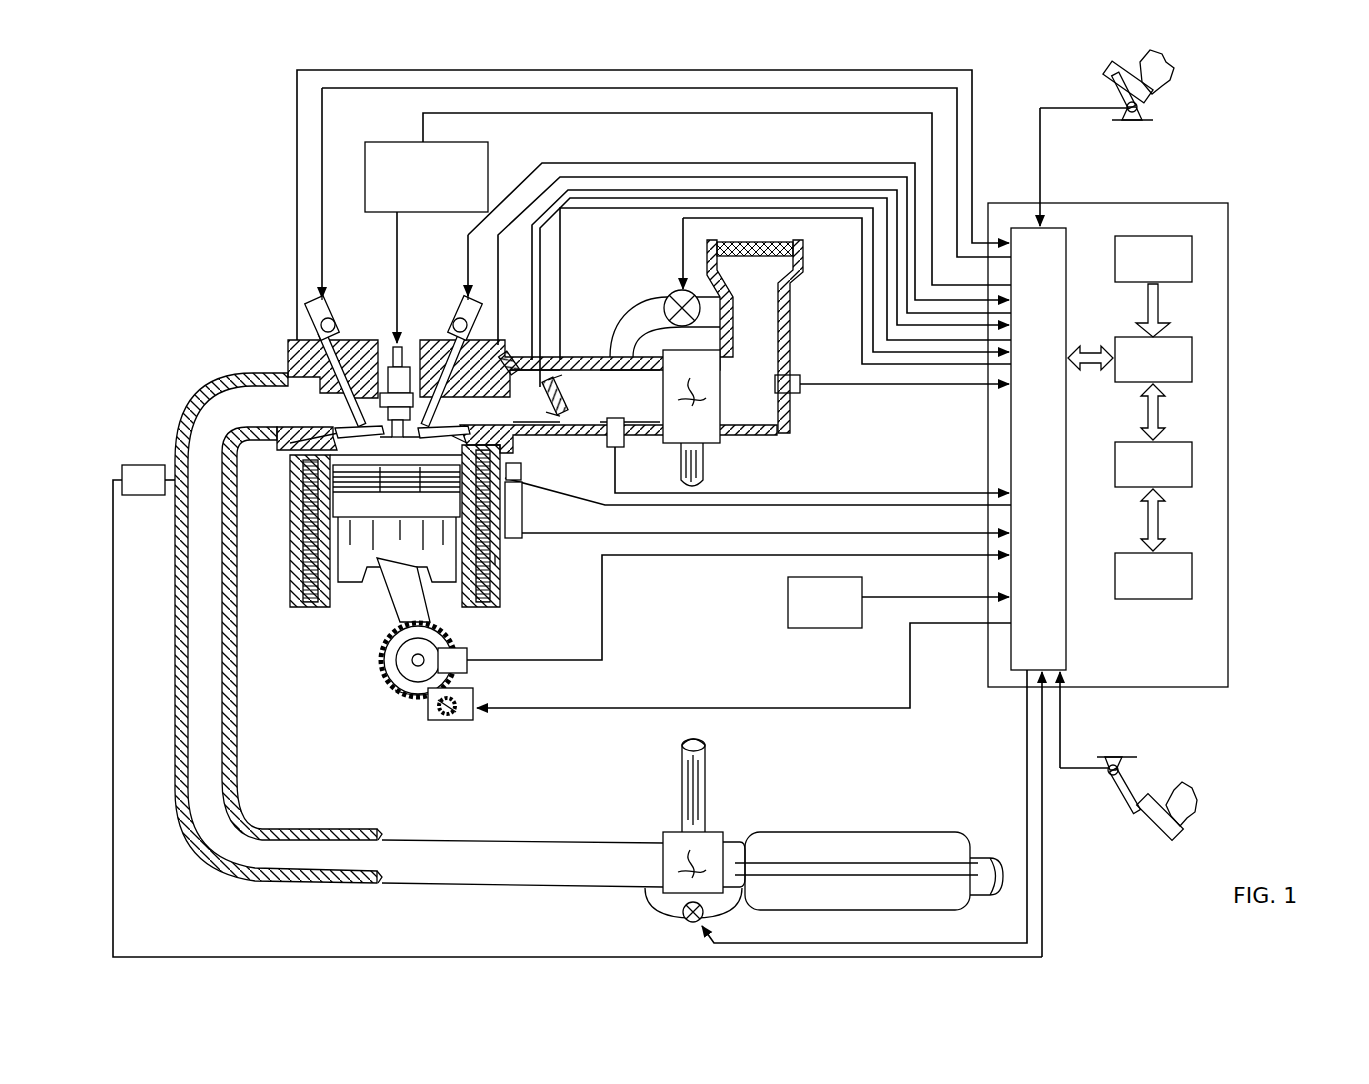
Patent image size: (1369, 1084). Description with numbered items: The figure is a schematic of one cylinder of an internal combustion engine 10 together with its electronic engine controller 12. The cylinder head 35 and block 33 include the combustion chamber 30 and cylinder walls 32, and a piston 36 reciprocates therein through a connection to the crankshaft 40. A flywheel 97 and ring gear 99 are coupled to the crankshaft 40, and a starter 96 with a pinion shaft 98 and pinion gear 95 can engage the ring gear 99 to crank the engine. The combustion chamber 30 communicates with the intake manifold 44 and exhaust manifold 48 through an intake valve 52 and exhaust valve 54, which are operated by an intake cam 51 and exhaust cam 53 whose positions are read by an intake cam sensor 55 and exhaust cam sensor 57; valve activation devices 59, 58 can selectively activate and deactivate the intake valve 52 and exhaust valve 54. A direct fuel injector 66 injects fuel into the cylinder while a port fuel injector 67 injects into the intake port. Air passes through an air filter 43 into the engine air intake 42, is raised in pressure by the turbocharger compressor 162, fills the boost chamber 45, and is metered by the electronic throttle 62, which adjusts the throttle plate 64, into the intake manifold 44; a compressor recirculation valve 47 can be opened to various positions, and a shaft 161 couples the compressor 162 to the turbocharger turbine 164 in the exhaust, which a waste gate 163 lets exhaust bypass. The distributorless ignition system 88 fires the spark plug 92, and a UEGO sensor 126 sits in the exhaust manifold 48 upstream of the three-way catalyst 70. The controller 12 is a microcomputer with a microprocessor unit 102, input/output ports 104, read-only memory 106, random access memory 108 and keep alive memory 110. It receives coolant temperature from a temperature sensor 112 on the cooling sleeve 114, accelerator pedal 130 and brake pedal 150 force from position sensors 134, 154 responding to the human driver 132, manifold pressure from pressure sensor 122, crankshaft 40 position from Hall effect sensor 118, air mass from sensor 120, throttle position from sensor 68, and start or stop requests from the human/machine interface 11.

The internal combustion engine 10 is at (212, 284).
The human/machine interface 11 is at (825, 602).
The electronic engine controller 12 is at (1218, 203).
The combustion chamber 30 is at (353, 450).
The cylinder walls 32 is at (338, 605).
The block 33 is at (287, 489).
The cylinder head 35 is at (285, 342).
The piston 36 is at (385, 575).
The crankshaft 40 is at (405, 680).
The engine air intake 42 is at (622, 262).
The air filter 43 is at (775, 252).
The intake manifold 44 is at (536, 409).
The boost chamber 45 is at (643, 414).
The compressor recirculation valve 47 is at (670, 295).
The exhaust manifold 48 is at (271, 417).
The intake cam 51 is at (462, 300).
The intake valve 52 is at (446, 428).
The exhaust cam 53 is at (326, 300).
The exhaust valve 54 is at (312, 398).
The intake cam sensor 55 is at (485, 324).
The exhaust cam sensor 57 is at (310, 318).
The valve activation device 58 is at (335, 322).
The valve activation device 59 is at (455, 324).
The electronic throttle 62 is at (561, 393).
The throttle plate 64 is at (558, 411).
The direct fuel injector 66 is at (521, 472).
The port fuel injector 67 is at (520, 346).
The throttle position sensor 68 is at (556, 378).
The three-way catalyst 70 is at (786, 832).
The distributorless ignition system 88 is at (488, 152).
The spark plug 92 is at (400, 340).
The pinion gear 95 is at (450, 716).
The starter 96 is at (470, 718).
The flywheel 97 is at (388, 672).
The pinion shaft 98 is at (438, 718).
The ring gear 99 is at (412, 698).
The microprocessor unit 102 is at (1193, 355).
The input/output ports 104 is at (1068, 235).
The read-only memory 106 is at (1193, 258).
The random access memory 108 is at (1193, 462).
The keep alive memory 110 is at (1193, 575).
The temperature sensor 112 is at (512, 488).
The cooling sleeve 114 is at (497, 560).
The Hall effect sensor 118 is at (466, 649).
The air mass sensor 120 is at (800, 380).
The pressure sensor 122 is at (607, 440).
The Universal Exhaust Gas Oxygen sensor 126 is at (122, 470).
The accelerator pedal 130 is at (1112, 85).
The human driver 132 is at (1162, 60).
The position sensor 134 is at (1160, 110).
The brake pedal 150 is at (1138, 815).
The position sensor 154 is at (1108, 762).
The shaft 161 is at (681, 466).
The turbocharger compressor 162 is at (702, 432).
The waste gate 163 is at (684, 918).
The turbocharger turbine 164 is at (670, 832).